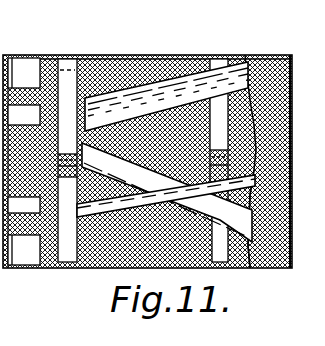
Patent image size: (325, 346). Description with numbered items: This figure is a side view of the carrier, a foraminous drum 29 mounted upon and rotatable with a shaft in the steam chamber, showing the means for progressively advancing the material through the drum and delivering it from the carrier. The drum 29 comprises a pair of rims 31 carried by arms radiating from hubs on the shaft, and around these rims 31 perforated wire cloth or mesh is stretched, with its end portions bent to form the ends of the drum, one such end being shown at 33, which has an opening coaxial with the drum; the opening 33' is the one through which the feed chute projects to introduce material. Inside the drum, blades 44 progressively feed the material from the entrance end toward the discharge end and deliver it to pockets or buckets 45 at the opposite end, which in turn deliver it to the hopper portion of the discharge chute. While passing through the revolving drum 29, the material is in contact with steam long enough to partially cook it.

The foraminous drum 29 is at (101, 51).
The rims 31 is at (68, 266).
The end of the drum 33 is at (266, 148).
The opening 33' is at (271, 239).
The blades 44 is at (166, 152).
The pockets or buckets 45 is at (25, 72).